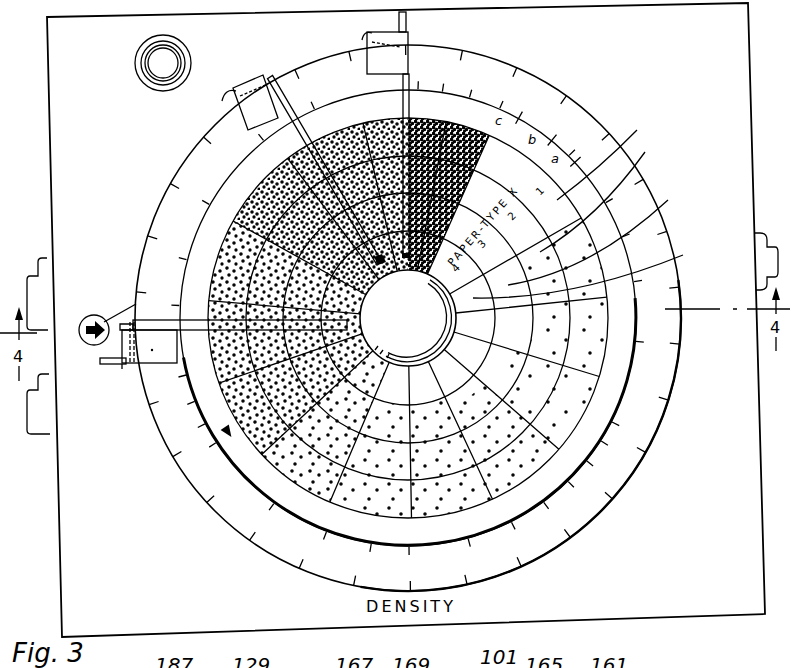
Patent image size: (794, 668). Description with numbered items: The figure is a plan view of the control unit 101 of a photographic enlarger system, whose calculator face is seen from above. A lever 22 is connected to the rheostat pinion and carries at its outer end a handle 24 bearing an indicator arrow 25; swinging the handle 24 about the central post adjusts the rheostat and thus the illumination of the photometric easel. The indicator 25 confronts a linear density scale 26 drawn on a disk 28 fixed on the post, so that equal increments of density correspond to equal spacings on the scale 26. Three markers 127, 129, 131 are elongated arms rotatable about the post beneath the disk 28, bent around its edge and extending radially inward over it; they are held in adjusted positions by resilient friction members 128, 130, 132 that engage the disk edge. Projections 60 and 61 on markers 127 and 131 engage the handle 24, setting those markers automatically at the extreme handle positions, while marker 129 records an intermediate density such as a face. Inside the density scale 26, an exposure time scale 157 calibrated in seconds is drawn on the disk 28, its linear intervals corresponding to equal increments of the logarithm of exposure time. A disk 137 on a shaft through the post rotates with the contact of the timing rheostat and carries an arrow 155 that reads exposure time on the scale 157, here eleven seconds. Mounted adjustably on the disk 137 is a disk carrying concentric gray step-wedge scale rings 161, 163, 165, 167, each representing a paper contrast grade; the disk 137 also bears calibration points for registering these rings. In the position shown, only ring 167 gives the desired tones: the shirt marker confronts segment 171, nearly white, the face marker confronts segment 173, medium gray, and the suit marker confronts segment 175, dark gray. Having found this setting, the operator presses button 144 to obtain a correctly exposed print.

The lever 22 is at (115, 314).
The handle 24 is at (125, 340).
The indicator arrow 25 is at (93, 315).
The density scale 26 is at (170, 446).
The disk 28 is at (547, 553).
The projection 60 is at (99, 362).
The projection 61 is at (409, 20).
The control unit 101 is at (539, 566).
The marker 127 is at (153, 352).
The resilient friction member 128 is at (127, 368).
The marker 129 is at (271, 80).
The resilient friction member 130 is at (230, 102).
The marker 131 is at (413, 42).
The resilient friction member 132 is at (364, 37).
The disk 137 is at (612, 410).
The button 144 is at (137, 67).
The arrow 155 is at (229, 440).
The scale of exposure time 157 is at (302, 530).
The gray step-wedge scale ring 161 is at (652, 134).
The gray step-wedge scale ring 163 is at (683, 154).
The gray step-wedge scale ring 165 is at (674, 191).
The gray step-wedge scale ring 167 is at (694, 249).
The segment 171 is at (212, 426).
The segment 173 is at (385, 282).
The segment 175 is at (410, 262).